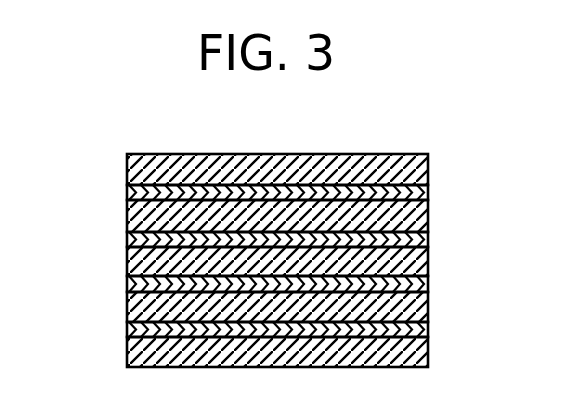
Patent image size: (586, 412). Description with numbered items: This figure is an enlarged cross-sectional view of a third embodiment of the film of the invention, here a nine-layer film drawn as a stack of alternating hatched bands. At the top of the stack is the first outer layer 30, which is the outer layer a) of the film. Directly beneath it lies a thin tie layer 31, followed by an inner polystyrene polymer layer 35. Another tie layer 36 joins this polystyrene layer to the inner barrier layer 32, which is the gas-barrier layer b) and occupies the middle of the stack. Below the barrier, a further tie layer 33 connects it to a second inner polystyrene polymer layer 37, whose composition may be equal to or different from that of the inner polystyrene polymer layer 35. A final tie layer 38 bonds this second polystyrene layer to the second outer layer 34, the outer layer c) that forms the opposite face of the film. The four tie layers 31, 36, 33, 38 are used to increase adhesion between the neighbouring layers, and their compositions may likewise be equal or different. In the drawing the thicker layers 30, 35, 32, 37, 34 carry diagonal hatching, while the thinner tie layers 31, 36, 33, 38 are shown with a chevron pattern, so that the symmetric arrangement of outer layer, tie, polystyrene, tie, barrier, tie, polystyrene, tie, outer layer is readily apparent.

The first outer layer 30 is at (428, 173).
The tie layer 31 is at (127, 193).
The inner polystyrene polymer layer 35 is at (428, 213).
The tie layer 36 is at (127, 238).
The inner barrier layer 32 is at (428, 259).
The tie layer 33 is at (127, 284).
The inner polystyrene polymer layer 37 is at (428, 306).
The tie layer 38 is at (127, 328).
The second outer layer 34 is at (428, 349).